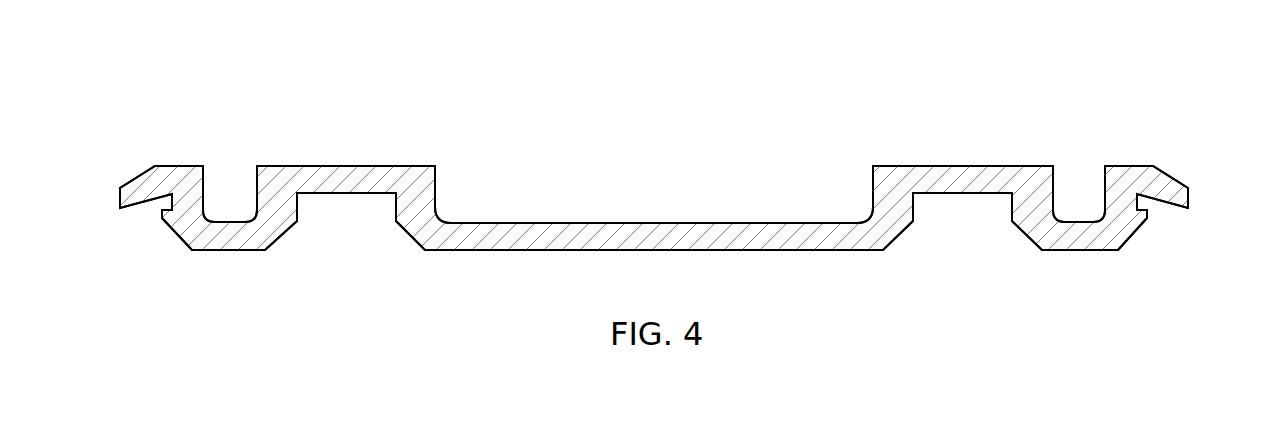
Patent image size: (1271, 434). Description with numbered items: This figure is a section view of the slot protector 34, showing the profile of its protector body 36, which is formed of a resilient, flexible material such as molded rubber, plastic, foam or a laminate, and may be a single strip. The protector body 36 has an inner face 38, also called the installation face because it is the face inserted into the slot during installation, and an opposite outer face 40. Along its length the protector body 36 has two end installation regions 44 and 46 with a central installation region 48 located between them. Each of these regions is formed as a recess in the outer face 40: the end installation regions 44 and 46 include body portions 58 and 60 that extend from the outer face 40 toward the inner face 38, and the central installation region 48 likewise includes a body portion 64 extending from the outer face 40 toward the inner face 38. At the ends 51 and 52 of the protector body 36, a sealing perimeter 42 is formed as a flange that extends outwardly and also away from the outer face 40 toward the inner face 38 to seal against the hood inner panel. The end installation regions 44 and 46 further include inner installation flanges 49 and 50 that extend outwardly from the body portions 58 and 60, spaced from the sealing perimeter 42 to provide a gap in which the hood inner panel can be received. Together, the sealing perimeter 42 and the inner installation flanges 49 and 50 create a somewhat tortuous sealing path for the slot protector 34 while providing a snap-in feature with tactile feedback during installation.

The slot protector 34 is at (652, 140).
The protector body 36 is at (975, 168).
The inner face 38 is at (654, 283).
The outer face 40 is at (354, 147).
The sealing perimeter 42 is at (140, 182).
The end installation region 44 is at (230, 146).
The end installation region 46 is at (1079, 146).
The central installation region 48 is at (654, 174).
The inner installation flange 49 is at (162, 220).
The inner installation flange 50 is at (1147, 220).
The end 51 is at (180, 168).
The end 52 is at (1128, 168).
The body portion 58 is at (228, 247).
The body portion 60 is at (1082, 247).
The body portion 64 is at (670, 245).